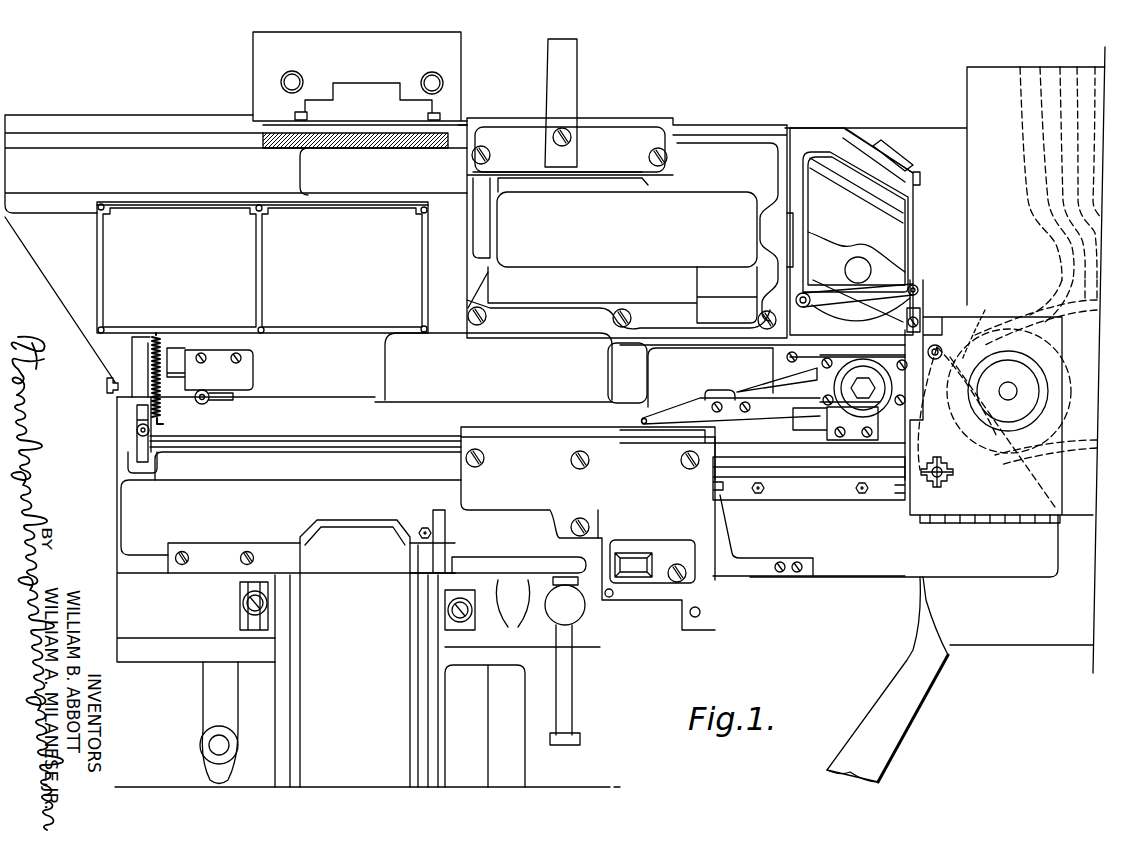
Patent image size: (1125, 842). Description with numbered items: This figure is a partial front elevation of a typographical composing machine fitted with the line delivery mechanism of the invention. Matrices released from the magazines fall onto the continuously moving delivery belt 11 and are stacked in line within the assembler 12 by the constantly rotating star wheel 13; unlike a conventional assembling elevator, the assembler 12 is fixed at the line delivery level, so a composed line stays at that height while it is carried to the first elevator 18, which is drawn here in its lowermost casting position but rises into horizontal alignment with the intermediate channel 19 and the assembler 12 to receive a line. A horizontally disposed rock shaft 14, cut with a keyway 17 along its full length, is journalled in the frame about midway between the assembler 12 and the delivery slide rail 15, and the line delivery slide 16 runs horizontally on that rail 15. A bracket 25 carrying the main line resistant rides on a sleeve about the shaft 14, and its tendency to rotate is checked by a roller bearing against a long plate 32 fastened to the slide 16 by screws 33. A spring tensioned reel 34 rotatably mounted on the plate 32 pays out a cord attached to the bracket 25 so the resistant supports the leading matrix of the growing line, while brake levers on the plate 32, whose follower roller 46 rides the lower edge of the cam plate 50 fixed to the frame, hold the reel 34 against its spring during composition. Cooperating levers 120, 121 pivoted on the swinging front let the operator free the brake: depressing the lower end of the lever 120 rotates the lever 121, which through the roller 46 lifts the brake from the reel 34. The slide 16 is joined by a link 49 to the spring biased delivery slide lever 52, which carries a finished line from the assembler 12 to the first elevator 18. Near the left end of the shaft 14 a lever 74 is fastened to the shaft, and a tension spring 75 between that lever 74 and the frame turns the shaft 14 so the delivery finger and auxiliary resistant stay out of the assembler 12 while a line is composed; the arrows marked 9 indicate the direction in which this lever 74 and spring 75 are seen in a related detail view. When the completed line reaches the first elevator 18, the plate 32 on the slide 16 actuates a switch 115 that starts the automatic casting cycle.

The delivery belt 11 is at (1085, 318).
The assembler 12 is at (833, 470).
The star wheel 13 is at (952, 470).
The rock shaft 14 is at (318, 436).
The delivery slide rail 15 is at (441, 412).
The line delivery slide 16 is at (722, 391).
The keyway 17 is at (322, 449).
The first elevator 18 is at (350, 533).
The intermediate channel 19 is at (531, 455).
The bracket 25 is at (868, 427).
The long plate 32 is at (700, 415).
The screws 33 is at (731, 415).
The spring tensioned reel 34 is at (875, 350).
The follower roller 46 is at (933, 345).
The link 49 is at (773, 388).
The cam plate 50 is at (685, 340).
The delivery slide lever 52 is at (912, 720).
The lever 74 is at (141, 462).
The tension spring 75 is at (152, 343).
The switch 115 is at (255, 377).
The lever 120 is at (1025, 478).
The lever 121 is at (983, 325).
The section line 9 is at (255, 344).